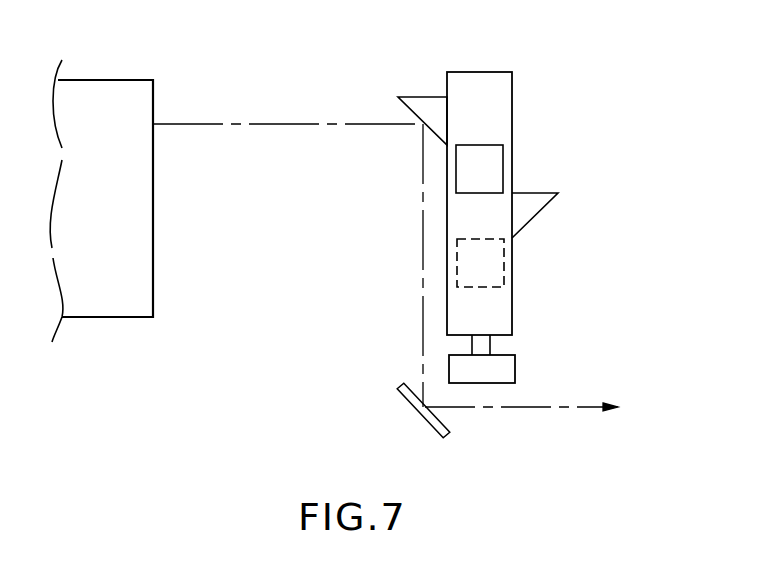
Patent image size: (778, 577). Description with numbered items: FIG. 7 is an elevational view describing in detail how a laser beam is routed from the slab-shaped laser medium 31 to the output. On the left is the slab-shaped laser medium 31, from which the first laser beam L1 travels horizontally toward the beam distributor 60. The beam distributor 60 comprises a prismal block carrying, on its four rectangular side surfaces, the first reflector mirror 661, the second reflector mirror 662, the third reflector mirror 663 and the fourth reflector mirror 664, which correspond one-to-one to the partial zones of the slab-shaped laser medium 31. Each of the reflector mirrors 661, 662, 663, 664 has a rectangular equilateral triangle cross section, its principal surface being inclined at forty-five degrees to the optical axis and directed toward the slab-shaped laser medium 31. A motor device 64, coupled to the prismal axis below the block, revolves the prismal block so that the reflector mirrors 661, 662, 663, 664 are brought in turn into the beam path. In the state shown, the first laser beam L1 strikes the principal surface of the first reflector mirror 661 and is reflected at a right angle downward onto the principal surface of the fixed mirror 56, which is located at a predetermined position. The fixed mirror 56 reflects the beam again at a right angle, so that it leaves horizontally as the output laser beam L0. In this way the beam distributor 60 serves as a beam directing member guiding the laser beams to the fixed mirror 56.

The slab-shaped laser medium 31 is at (107, 82).
The first laser beam L1 is at (287, 126).
The first reflector mirror 661 is at (424, 96).
The beam distributor 60 is at (505, 93).
The second reflector mirror 662 is at (500, 160).
The third reflector mirror 663 is at (535, 209).
The fourth reflector mirror 664 is at (508, 262).
The motor device 64 is at (516, 368).
The output laser beam L0 is at (519, 409).
The fixed mirror 56 is at (428, 424).